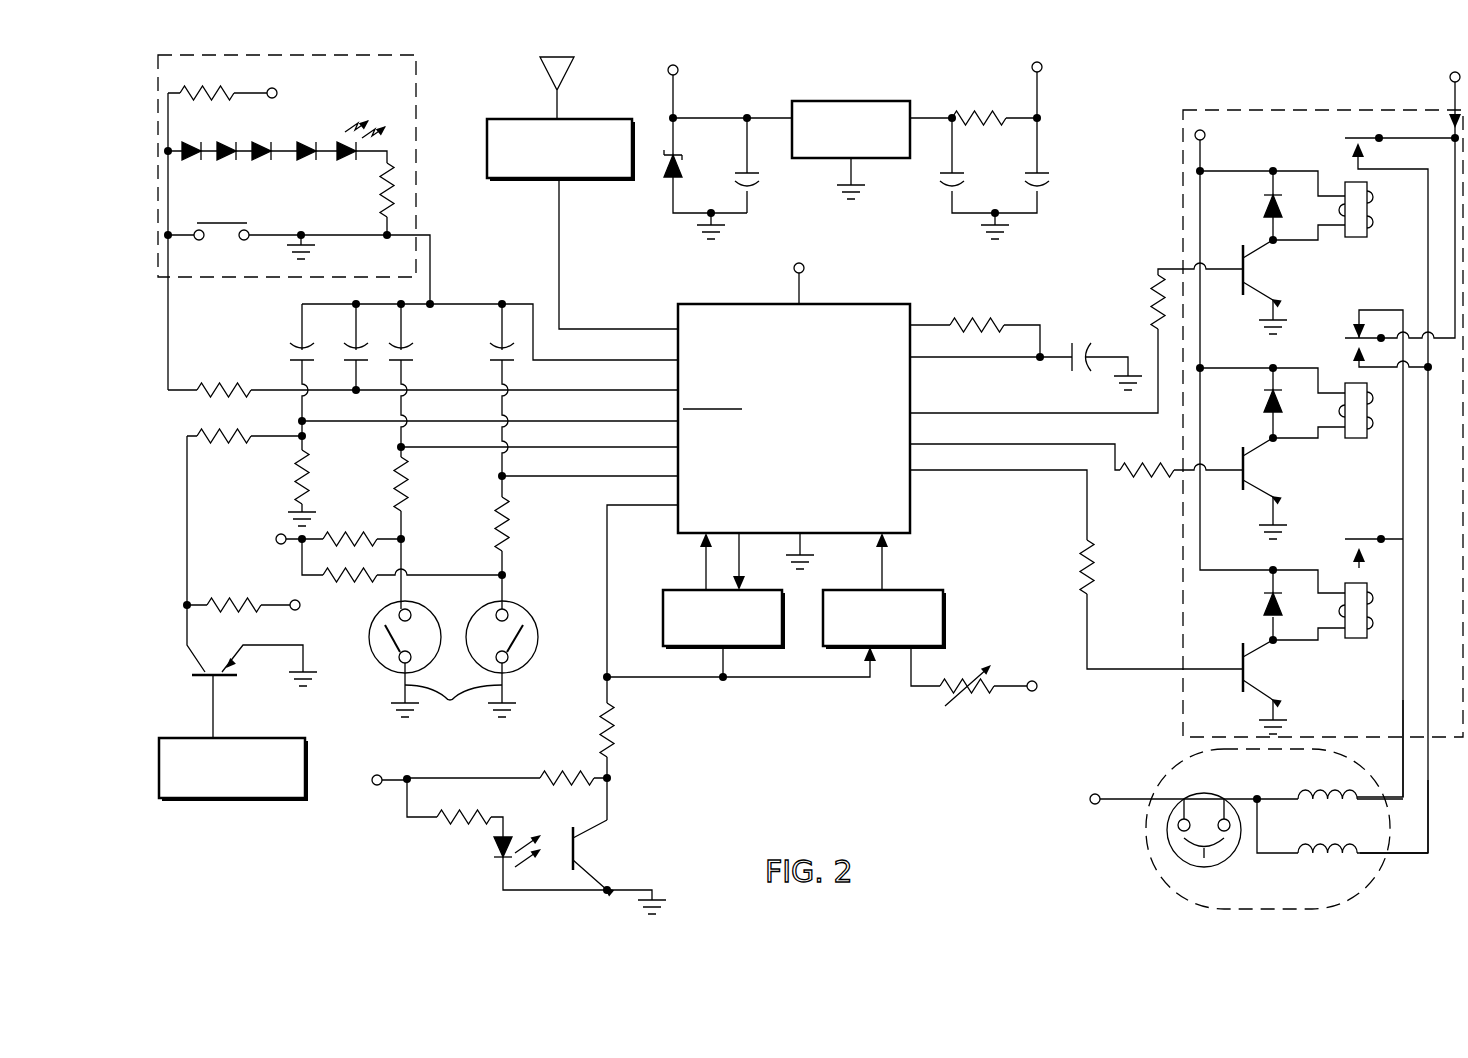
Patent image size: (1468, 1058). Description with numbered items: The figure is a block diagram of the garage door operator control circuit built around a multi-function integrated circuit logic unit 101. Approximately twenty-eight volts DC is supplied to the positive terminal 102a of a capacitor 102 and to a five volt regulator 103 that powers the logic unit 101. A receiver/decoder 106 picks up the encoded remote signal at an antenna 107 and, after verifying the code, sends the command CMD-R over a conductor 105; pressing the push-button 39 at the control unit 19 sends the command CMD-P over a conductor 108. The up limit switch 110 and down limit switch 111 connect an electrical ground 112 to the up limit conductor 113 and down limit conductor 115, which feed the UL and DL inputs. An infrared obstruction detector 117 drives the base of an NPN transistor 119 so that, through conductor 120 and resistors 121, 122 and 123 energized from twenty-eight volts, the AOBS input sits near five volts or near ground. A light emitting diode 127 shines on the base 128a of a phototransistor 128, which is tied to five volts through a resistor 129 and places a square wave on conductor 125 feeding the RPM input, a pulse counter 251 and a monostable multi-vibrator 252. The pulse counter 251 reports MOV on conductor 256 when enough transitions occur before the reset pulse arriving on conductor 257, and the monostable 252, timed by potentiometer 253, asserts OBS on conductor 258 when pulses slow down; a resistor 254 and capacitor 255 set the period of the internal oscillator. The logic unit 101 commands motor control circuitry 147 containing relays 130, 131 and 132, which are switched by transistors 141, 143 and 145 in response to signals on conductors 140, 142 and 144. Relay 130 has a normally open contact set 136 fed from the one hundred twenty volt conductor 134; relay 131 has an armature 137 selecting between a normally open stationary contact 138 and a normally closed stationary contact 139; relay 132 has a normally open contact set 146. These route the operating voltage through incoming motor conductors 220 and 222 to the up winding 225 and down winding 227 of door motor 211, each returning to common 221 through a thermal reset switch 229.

The control unit 19 is at (417, 108).
The push-button 39 is at (213, 223).
The integrated circuit logic unit 101 is at (855, 304).
The capacitor 102 is at (1046, 205).
The positive terminal 102a is at (1042, 135).
The 5 volt regulator 103 is at (866, 100).
The conductor 105 is at (561, 217).
The receiver/decoder 106 is at (586, 121).
The antenna 107 is at (575, 64).
The conductor 108 is at (262, 388).
The up limit switch 110 is at (526, 666).
The down limit switch 111 is at (381, 666).
The electrical ground 112 is at (453, 695).
The up limit conductor 113 is at (508, 591).
The down limit conductor 115 is at (410, 591).
The infrared obstruction detector 117 is at (262, 738).
The NPN transistor 119 is at (204, 686).
The conductor 120 is at (380, 425).
The resistor 121 is at (237, 601).
The resistor 122 is at (249, 447).
The resistor 123 is at (296, 477).
The conductor 125 is at (606, 541).
The light emitting diode 127 is at (496, 849).
The phototransistor 128 is at (592, 831).
The base 128a is at (570, 839).
The resistor 129 is at (544, 775).
The relay 130 is at (1355, 246).
The relay 131 is at (1357, 446).
The relay 132 is at (1356, 651).
The 120 volt conductor 134 is at (1453, 161).
The normally open contact set 136 is at (1338, 156).
The armature 137 is at (1350, 337).
The normally open stationary contact 138 is at (1342, 355).
The normally closed stationary contact 139 is at (1343, 314).
The conductor 140 is at (1099, 410).
The transistor 141 is at (1250, 273).
The conductor 142 is at (1117, 453).
The transistor 143 is at (1252, 479).
The conductor 144 is at (1083, 502).
The transistor 145 is at (1250, 681).
The normally open stationary contact set 146 is at (1343, 561).
The motor control circuitry 147 is at (1183, 208).
The door motor 211 is at (1146, 853).
The incoming motor conductor 220 is at (1430, 857).
The common 221 is at (1120, 798).
The incoming motor conductor 222 is at (1402, 716).
The up winding 225 is at (1324, 859).
The down winding 227 is at (1312, 792).
The thermal reset switch 229 is at (1190, 797).
The pulse counter 251 is at (664, 634).
The monostable multi-vibrator 252 is at (947, 603).
The potentiometer 253 is at (968, 703).
The resistor 254 is at (975, 322).
The capacitor 255 is at (1077, 342).
The conductor 256 is at (704, 569).
The conductor 257 is at (798, 558).
The conductor 258 is at (884, 581).